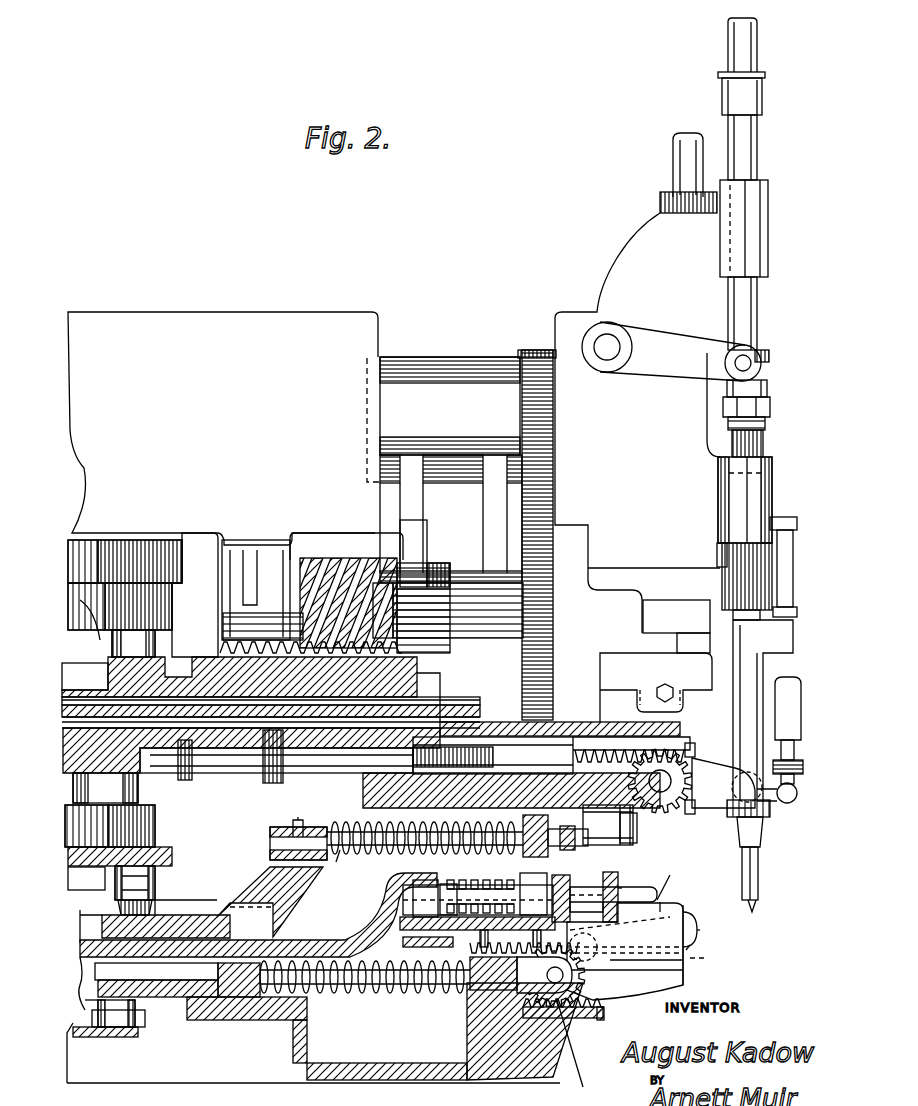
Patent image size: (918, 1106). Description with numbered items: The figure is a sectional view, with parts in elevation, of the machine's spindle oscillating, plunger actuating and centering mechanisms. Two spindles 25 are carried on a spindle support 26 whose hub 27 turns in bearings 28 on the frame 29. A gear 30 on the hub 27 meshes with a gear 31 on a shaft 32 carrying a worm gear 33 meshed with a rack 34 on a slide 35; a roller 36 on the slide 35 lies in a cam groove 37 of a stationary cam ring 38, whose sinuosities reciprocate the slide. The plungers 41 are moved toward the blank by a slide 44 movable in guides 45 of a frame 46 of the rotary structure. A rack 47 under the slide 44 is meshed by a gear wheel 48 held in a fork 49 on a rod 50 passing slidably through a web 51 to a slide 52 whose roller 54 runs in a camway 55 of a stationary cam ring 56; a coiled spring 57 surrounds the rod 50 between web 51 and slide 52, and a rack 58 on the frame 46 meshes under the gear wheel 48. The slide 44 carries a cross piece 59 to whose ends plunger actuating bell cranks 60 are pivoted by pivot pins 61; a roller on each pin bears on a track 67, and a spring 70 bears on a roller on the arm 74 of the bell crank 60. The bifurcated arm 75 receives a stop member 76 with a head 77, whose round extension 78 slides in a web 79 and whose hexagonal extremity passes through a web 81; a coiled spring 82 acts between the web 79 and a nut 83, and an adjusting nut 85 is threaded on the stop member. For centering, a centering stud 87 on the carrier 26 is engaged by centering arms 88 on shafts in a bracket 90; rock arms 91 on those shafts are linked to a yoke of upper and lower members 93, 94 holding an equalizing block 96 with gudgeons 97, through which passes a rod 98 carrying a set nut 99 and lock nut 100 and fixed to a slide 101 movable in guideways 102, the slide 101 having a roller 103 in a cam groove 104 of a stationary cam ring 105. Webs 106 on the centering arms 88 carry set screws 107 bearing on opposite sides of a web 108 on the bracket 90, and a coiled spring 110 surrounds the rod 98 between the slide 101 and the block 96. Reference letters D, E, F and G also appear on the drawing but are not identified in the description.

The spindles 25 is at (760, 338).
The spindle support 26 is at (580, 330).
The hub 27 is at (466, 385).
The bearings 28 is at (405, 372).
The frame 29 is at (258, 330).
The gear 30 is at (537, 355).
The gear 31 is at (556, 535).
The shaft 32 is at (530, 615).
The worm gear 33 is at (345, 560).
The rack 34 is at (256, 570).
The slide 35 is at (184, 687).
The roller 36 is at (125, 598).
The cam groove 37 is at (120, 612).
The stationary cam ring 38 is at (93, 612).
The plungers 41 is at (758, 890).
The slide 44 is at (440, 982).
The guides 45 is at (684, 905).
The frame 46 is at (607, 1018).
The rack 47 is at (468, 975).
The gear wheel 48 is at (688, 975).
The fork 49 is at (480, 1022).
The rod 50 is at (378, 995).
The web 51 is at (525, 985).
The slide 52 is at (200, 998).
The roller 54 is at (95, 1033).
The camway 55 is at (128, 1030).
The stationary cam ring 56 is at (88, 1012).
The coiled spring 57 is at (300, 992).
The rack 58 is at (585, 998).
The cross piece 59 is at (620, 887).
The plunger actuating bell cranks 60 is at (688, 924).
The pivot pin 61 is at (570, 996).
The track 67 is at (705, 958).
The spring 70 is at (625, 951).
The arm 74 is at (703, 942).
The arm 75 is at (605, 880).
The stop member 76 is at (635, 895).
The head 77 is at (660, 902).
The extension 78 is at (463, 888).
The web 79 is at (478, 894).
The web 81 is at (420, 897).
The coiled spring 82 is at (480, 882).
The nut 83 is at (388, 858).
The adjusting nut 85 is at (563, 891).
The centering stud 87 is at (683, 640).
The centering arms 88 is at (640, 660).
The bracket 90 is at (503, 755).
The rock arms 91 is at (626, 843).
The upper member 93 is at (590, 806).
The lower member 94 is at (481, 887).
The equalizing block 96 is at (524, 827).
The gudgeons 97 is at (538, 814).
The rod 98 is at (425, 832).
The set nut 99 is at (567, 826).
The lock nut 100 is at (612, 806).
The slide 101 is at (262, 885).
The guideways 102 is at (86, 937).
The roller 103 is at (162, 867).
The cam groove 104 is at (130, 868).
The stationary cam ring 105 is at (110, 810).
The webs 106 is at (658, 686).
The set screws 107 is at (645, 700).
The web 108 is at (645, 677).
The coiled spring 110 is at (330, 835).
The bracket D is at (718, 797).
The point E is at (700, 930).
The point F is at (752, 912).
The spring G is at (341, 839).